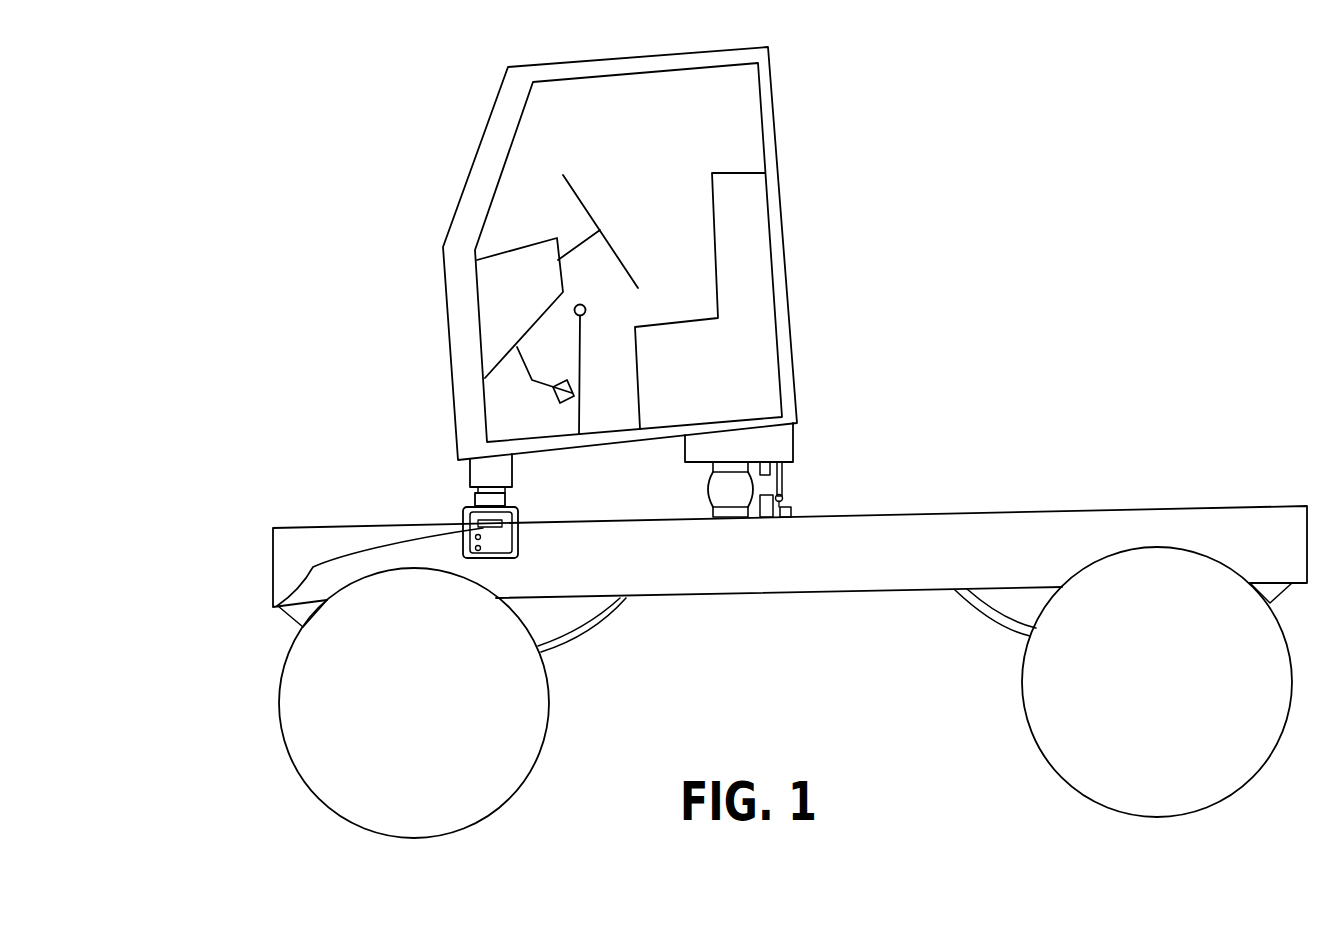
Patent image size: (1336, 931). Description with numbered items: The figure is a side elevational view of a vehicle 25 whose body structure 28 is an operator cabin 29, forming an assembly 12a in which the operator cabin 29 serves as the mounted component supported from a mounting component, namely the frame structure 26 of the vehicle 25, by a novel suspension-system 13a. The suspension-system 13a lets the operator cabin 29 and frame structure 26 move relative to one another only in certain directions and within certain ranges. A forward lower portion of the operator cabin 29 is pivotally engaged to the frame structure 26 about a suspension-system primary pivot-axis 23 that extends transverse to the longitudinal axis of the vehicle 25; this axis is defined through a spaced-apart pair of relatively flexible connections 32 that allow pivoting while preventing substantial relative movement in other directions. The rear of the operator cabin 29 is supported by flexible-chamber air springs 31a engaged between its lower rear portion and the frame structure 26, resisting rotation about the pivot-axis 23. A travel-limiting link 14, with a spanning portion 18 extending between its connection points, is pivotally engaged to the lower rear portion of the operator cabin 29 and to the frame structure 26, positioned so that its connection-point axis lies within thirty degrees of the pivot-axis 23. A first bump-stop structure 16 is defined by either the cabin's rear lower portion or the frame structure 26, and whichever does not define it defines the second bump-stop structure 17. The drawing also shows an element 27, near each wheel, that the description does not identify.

The assembly 12a is at (858, 278).
The body structure 28 is at (775, 108).
The operator cabin 29 is at (775, 142).
The frame structure 26 is at (1032, 532).
The suspension spring 27 is at (585, 625).
The suspension-system 13a is at (433, 477).
The suspension-system primary pivot-axis 23 is at (483, 502).
The relatively flexible connections 32 is at (277, 606).
The vehicle 25 is at (892, 333).
The flexible-chamber air springs 31a is at (740, 492).
The second bump-stop structure 17 is at (760, 462).
The travel-limiting link 14 is at (783, 492).
The spanning portion 18 is at (786, 500).
The first bump-stop structure 16 is at (785, 517).